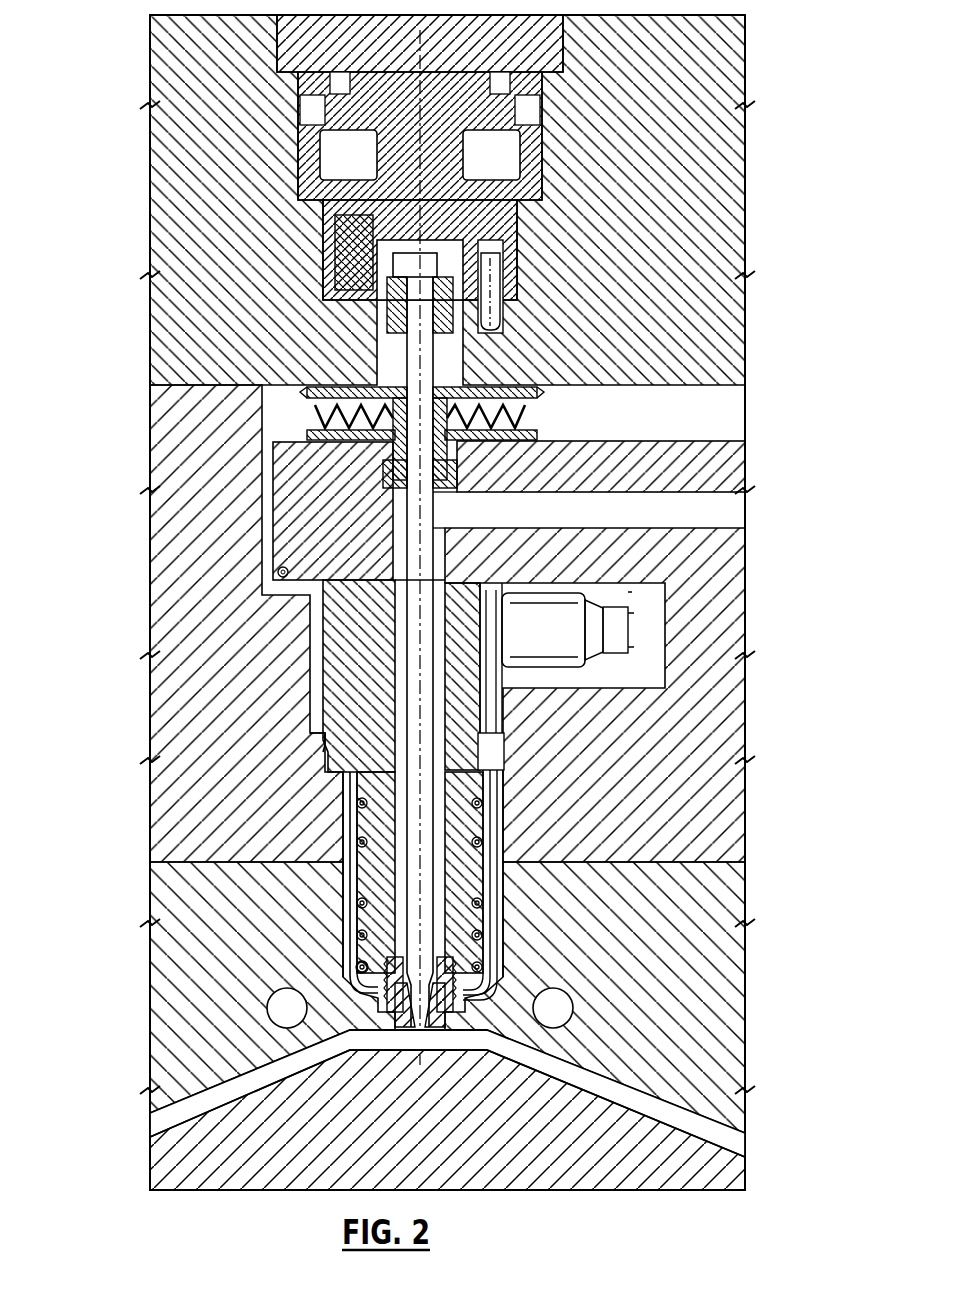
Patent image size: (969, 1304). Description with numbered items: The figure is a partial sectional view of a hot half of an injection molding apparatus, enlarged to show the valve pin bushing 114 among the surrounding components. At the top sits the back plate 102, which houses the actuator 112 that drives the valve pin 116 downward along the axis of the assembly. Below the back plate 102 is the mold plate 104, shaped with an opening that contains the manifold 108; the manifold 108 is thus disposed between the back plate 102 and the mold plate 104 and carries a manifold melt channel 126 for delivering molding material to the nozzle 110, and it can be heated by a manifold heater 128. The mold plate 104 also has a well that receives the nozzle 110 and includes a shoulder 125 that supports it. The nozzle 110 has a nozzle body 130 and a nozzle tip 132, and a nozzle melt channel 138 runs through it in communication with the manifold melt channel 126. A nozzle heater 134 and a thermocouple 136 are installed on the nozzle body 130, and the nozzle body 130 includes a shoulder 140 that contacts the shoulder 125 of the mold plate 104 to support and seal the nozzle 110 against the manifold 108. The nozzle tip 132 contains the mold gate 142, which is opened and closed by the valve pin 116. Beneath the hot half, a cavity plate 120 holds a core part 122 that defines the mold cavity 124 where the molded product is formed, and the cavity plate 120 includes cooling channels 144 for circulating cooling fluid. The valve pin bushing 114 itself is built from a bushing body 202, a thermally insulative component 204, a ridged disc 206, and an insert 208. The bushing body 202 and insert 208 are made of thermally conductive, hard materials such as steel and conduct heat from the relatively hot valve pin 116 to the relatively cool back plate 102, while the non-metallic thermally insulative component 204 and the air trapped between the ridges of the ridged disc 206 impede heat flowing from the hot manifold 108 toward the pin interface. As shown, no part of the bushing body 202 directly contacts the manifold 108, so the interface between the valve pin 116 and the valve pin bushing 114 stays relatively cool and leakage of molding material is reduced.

The back plate 102 is at (746, 190).
The mold plate 104 is at (718, 678).
The manifold 108 is at (723, 462).
The nozzle 110 is at (468, 862).
The actuator 112 is at (586, 105).
The valve pin bushing 114 is at (288, 434).
The valve pin 116 is at (430, 356).
The cavity plate 120 is at (722, 996).
The core part 122 is at (431, 1142).
The mold cavity 124 is at (704, 1130).
The shoulder of the mold plate 125 is at (323, 774).
The manifold melt channel 126 is at (622, 521).
The manifold heater 128 is at (278, 575).
The nozzle body 130 is at (365, 873).
The nozzle tip 132 is at (366, 1007).
The nozzle heater 134 is at (355, 962).
The thermocouple 136 is at (488, 912).
The nozzle melt channel 138 is at (438, 740).
The shoulder of the nozzle body 140 is at (322, 752).
The mold gate 142 is at (424, 1033).
The cooling channel 144 is at (561, 996).
The bushing body 202 is at (313, 395).
The thermally insulative component 204 is at (385, 478).
The ridged disc 206 is at (318, 420).
The insert 208 is at (380, 438).